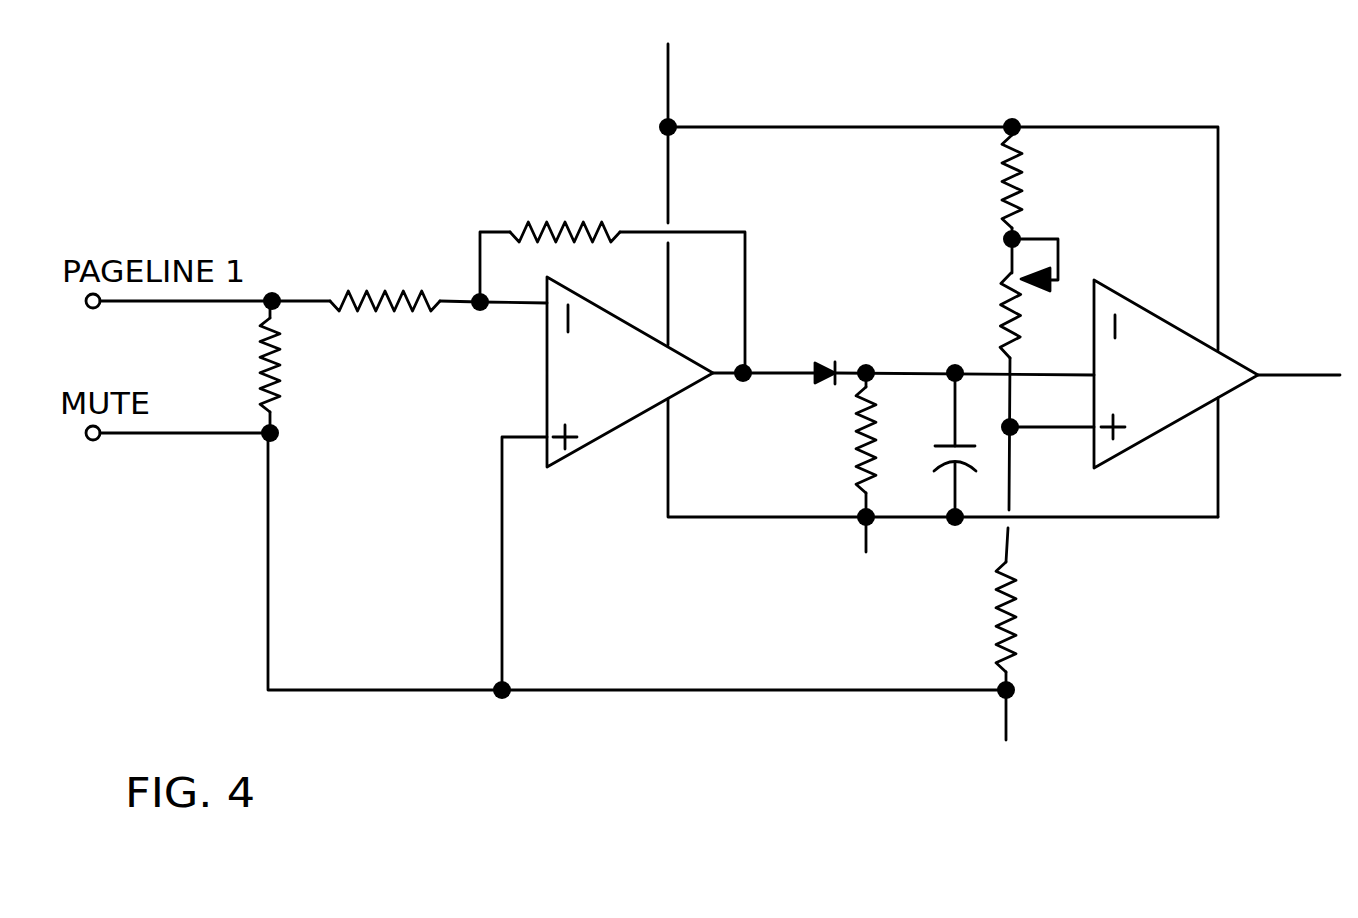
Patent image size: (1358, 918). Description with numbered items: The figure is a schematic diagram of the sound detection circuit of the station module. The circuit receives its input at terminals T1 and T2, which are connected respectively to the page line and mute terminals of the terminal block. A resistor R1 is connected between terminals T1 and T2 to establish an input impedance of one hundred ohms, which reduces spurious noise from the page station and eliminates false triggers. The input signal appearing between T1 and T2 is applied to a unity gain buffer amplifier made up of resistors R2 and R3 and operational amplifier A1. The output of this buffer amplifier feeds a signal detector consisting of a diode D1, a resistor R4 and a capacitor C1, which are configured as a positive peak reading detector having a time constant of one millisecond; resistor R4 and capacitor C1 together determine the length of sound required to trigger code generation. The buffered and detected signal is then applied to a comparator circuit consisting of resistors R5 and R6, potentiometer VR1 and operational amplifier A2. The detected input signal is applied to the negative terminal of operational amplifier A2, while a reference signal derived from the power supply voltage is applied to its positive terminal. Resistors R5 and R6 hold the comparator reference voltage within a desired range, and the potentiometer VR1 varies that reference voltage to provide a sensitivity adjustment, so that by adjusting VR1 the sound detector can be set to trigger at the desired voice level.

The input terminal T1 is at (115, 317).
The input terminal T2 is at (115, 449).
The resistor R1 is at (300, 365).
The resistor R2 is at (385, 281).
The resistor R3 is at (565, 213).
The resistor R4 is at (842, 440).
The resistor R5 is at (1043, 181).
The resistor R6 is at (1038, 617).
The potentiometer VR1 is at (991, 298).
The capacitor C1 is at (943, 441).
The diode D1 is at (822, 355).
The operational amplifier A1 is at (630, 372).
The operational amplifier A2 is at (1176, 374).